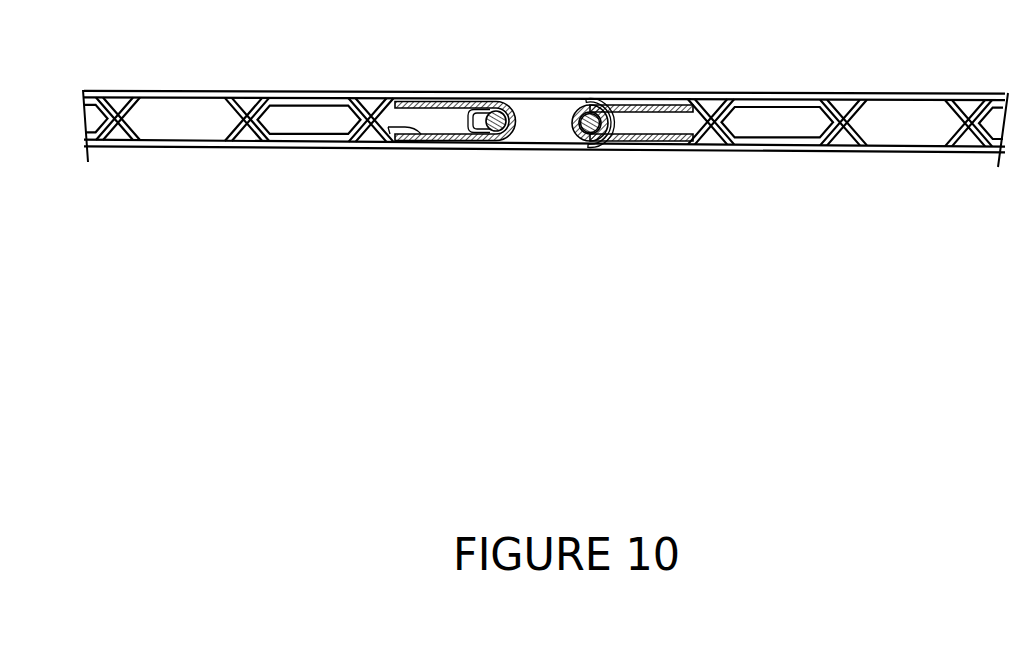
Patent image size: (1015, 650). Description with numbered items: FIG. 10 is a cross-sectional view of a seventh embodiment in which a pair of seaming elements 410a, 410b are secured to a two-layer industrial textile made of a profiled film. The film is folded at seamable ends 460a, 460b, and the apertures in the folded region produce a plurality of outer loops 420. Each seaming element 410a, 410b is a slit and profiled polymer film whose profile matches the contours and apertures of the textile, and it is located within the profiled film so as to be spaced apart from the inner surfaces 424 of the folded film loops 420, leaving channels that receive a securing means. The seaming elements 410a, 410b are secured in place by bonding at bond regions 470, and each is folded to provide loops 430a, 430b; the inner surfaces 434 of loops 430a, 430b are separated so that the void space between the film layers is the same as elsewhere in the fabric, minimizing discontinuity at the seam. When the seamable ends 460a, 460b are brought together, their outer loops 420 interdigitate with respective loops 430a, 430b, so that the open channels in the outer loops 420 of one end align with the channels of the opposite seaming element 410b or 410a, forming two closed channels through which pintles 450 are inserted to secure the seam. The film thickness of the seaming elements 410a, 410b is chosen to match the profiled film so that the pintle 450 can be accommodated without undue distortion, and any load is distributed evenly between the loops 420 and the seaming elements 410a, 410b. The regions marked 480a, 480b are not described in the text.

The seaming element 410a is at (482, 148).
The seaming element 410b is at (667, 118).
The outer loop 420 is at (605, 155).
The inner surface of folded film loop 424 is at (596, 98).
The loop of seaming element 430a is at (517, 141).
The loop of seaming element 430b is at (571, 122).
The inner surface of loop 434 is at (372, 128).
The pintle 450 is at (623, 123).
The seamable end 460a is at (248, 158).
The seamable end 460b is at (900, 160).
The bond region 470 is at (446, 123).
The first band end junction 480a is at (372, 96).
The second band end junction 480b is at (711, 94).